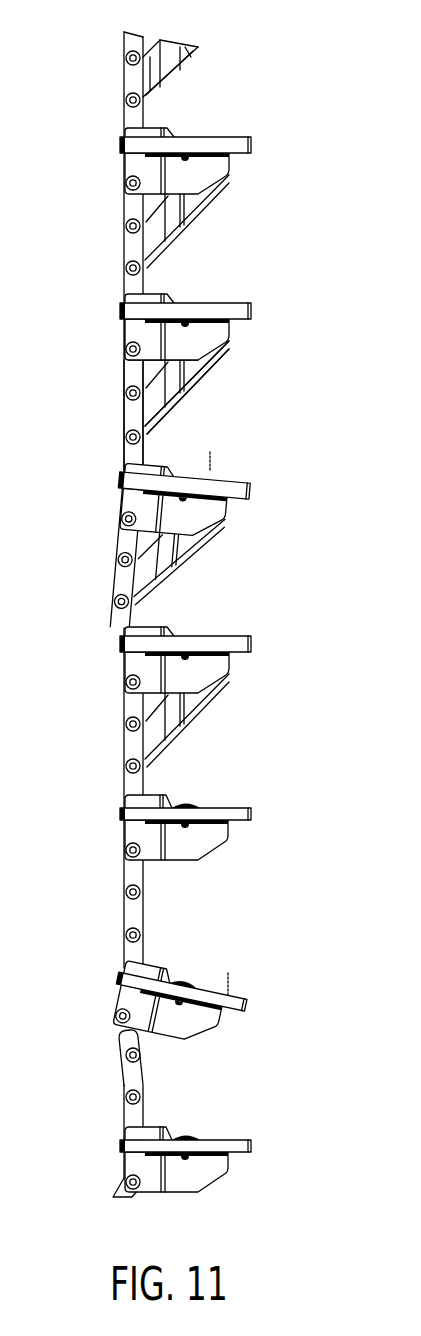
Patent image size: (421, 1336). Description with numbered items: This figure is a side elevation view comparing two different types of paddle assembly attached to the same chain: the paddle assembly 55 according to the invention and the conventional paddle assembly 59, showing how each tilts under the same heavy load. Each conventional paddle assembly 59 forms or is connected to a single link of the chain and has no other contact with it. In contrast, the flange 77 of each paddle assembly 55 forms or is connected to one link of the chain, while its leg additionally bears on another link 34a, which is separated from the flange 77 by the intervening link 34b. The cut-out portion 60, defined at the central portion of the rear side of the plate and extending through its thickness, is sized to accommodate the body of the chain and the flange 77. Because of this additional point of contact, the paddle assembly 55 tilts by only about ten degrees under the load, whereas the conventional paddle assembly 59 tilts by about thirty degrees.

The link 34a is at (130, 415).
The link 34b is at (128, 533).
The paddle assembly 55 is at (183, 442).
The conventional paddle assembly 59 is at (248, 813).
The cut-out portion 60 is at (193, 368).
The flange 77 is at (135, 332).